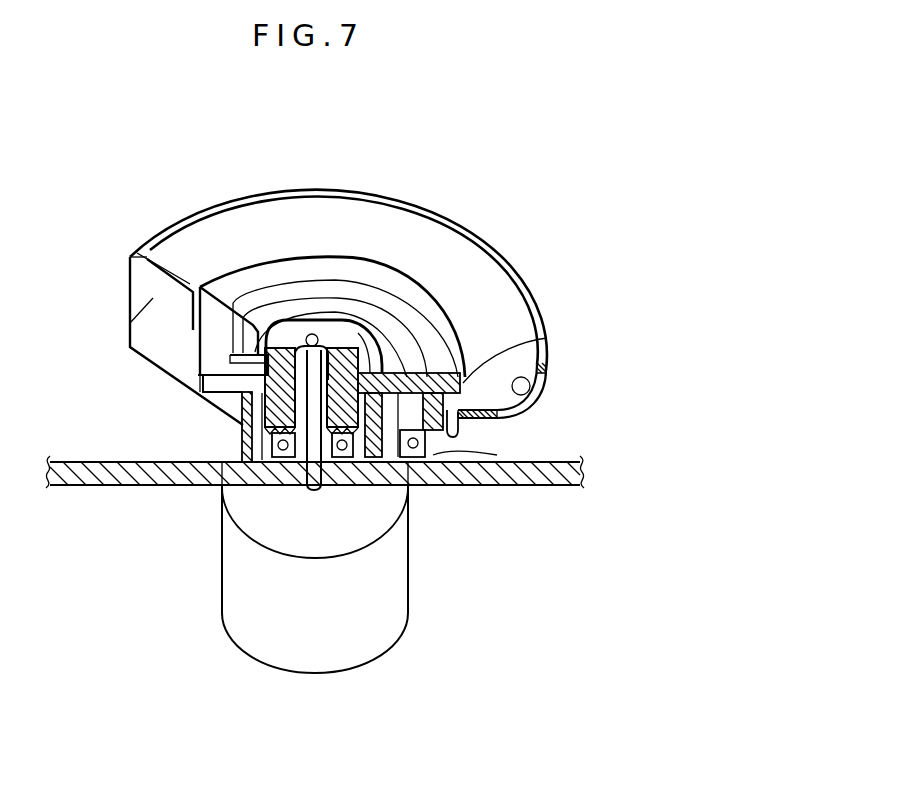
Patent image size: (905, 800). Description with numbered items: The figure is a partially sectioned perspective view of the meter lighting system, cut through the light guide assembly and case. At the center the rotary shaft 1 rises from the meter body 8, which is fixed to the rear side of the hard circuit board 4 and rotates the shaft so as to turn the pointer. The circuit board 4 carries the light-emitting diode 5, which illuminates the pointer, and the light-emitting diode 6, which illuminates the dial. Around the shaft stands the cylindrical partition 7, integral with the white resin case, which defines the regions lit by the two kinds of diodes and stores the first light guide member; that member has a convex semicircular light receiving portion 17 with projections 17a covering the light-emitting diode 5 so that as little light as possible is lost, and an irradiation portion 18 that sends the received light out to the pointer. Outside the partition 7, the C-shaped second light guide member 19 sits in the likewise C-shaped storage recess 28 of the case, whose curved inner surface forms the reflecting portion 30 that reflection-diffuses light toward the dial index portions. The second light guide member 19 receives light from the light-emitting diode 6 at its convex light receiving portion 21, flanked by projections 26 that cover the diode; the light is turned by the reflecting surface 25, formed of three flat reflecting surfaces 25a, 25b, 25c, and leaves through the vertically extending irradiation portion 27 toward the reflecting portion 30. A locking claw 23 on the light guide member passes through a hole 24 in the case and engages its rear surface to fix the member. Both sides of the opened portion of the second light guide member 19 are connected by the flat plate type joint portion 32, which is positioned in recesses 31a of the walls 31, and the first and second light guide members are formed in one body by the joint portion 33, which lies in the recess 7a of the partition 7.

The rotary shaft 1 is at (308, 270).
The circuit board 4 is at (574, 487).
The light-emitting diode 5 is at (313, 492).
The light-emitting diode 6 is at (417, 460).
The partition 7 is at (243, 300).
The recess 7a is at (243, 420).
The meter body 8 is at (235, 570).
The light receiving portion 17 is at (292, 472).
The projections 17a is at (225, 455).
The irradiation portion 18 is at (340, 343).
The second light guide member 19 is at (260, 303).
The light receiving portion 21 is at (433, 462).
The locking claw 23 is at (458, 420).
The hole 24 is at (497, 458).
The reflecting surface 25 is at (367, 301).
The reflecting surface 25a is at (420, 340).
The reflecting surface 25b is at (405, 295).
The reflecting surface 25c is at (400, 268).
The projections 26 is at (405, 500).
The irradiation portion 27 is at (547, 338).
The storage recess 28 is at (268, 229).
The reflecting portion 30 is at (535, 400).
The walls 31 is at (130, 320).
The recesses 31a is at (197, 330).
The joint portion 32 is at (175, 377).
The joint portion 33 is at (240, 427).